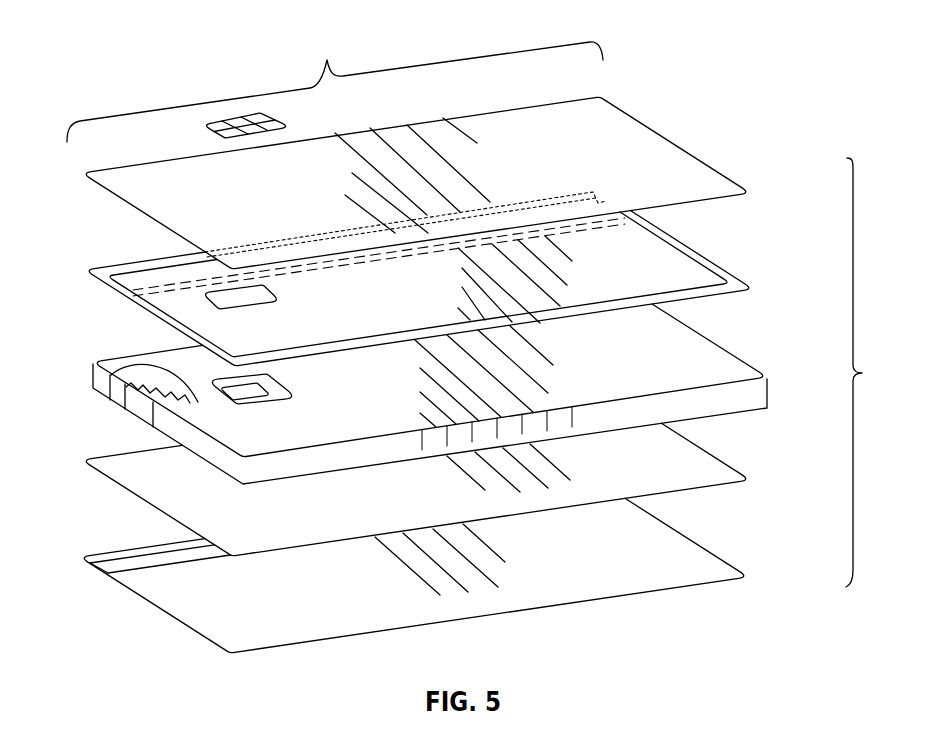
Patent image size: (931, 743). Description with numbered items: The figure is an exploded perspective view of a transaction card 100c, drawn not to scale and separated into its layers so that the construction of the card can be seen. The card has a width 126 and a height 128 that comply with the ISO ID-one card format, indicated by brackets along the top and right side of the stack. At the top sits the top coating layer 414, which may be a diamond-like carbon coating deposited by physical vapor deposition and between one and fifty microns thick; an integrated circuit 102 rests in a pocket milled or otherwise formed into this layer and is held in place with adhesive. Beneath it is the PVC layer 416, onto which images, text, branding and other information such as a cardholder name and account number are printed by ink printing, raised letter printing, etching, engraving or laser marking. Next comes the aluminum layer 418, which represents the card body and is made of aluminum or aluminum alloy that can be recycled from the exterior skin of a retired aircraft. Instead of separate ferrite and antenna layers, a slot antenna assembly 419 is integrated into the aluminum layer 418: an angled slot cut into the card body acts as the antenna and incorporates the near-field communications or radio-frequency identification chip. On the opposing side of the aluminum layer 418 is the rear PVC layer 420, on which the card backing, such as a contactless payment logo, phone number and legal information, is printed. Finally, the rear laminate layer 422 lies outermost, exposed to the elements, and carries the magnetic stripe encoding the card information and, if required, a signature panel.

The transaction card 100c is at (119, 82).
The integrated circuit 102 is at (203, 125).
The width 126 is at (335, 88).
The height 128 is at (877, 372).
The top coating layer 414 is at (724, 185).
The PVC layer 416 is at (165, 267).
The aluminum layer 418 is at (439, 394).
The slot antenna assembly 419 is at (120, 391).
The rear PVC layer 420 is at (708, 468).
The rear laminate layer 422 is at (717, 566).